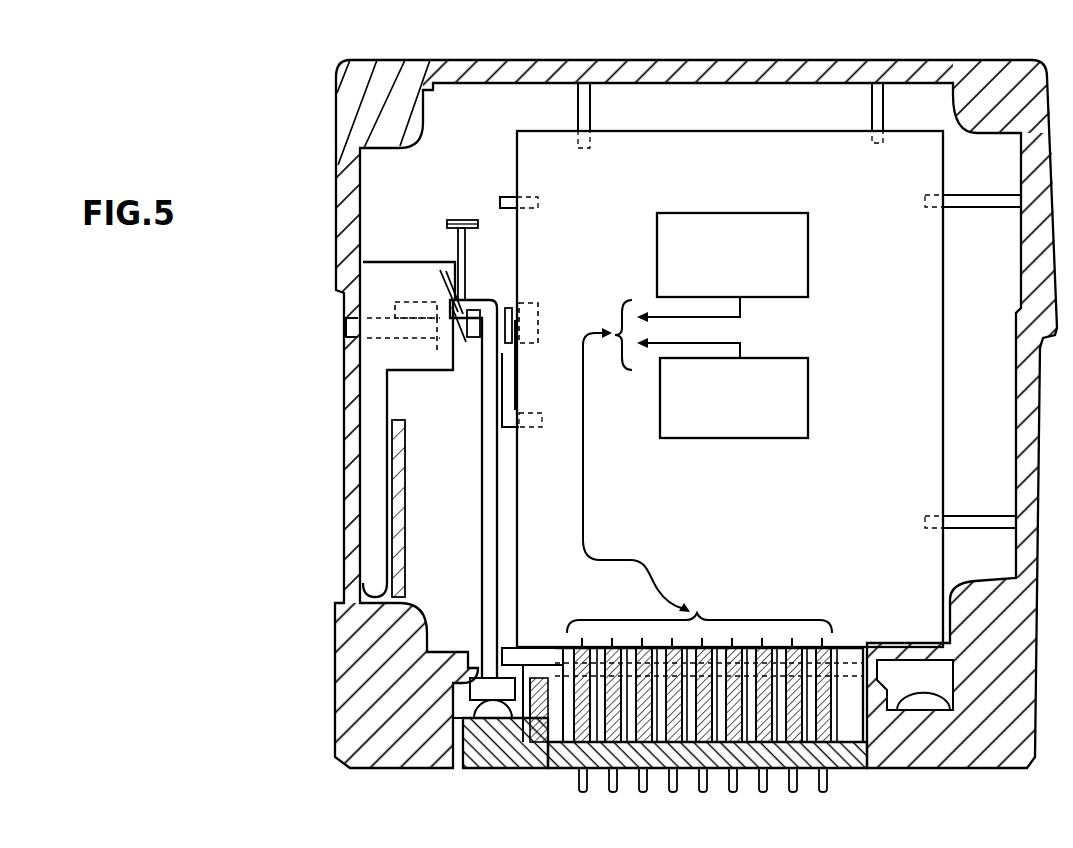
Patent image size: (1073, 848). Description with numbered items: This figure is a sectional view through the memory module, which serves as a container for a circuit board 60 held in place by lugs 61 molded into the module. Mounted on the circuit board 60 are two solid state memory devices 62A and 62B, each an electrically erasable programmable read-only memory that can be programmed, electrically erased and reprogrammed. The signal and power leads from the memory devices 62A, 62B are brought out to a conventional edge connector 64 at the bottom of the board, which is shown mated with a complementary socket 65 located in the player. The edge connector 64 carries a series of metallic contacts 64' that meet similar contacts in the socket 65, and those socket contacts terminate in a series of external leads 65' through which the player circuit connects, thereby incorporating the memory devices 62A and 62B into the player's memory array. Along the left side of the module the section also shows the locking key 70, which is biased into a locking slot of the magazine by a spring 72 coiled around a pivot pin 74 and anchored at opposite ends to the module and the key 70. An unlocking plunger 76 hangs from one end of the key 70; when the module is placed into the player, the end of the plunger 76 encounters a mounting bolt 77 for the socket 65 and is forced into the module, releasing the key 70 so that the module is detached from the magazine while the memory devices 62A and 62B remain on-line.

The circuit board 60 is at (930, 396).
The lugs 61 is at (578, 100).
The memory device 62A is at (808, 252).
The memory device 62B is at (806, 393).
The edge connector 64 is at (691, 727).
The metallic contacts 64' is at (723, 625).
The socket 65 is at (505, 765).
The external leads 65' is at (677, 790).
The locking key 70 is at (384, 404).
The spring 72 is at (470, 296).
The pivot pin 74 is at (344, 327).
The unlocking plunger 76 is at (483, 491).
The mounting bolt 77 is at (478, 703).